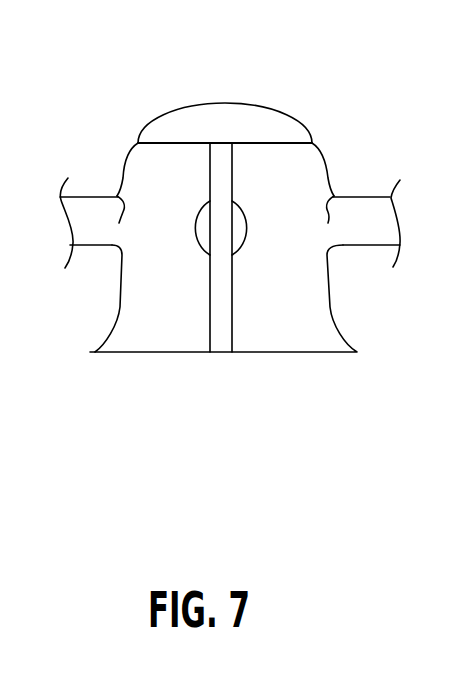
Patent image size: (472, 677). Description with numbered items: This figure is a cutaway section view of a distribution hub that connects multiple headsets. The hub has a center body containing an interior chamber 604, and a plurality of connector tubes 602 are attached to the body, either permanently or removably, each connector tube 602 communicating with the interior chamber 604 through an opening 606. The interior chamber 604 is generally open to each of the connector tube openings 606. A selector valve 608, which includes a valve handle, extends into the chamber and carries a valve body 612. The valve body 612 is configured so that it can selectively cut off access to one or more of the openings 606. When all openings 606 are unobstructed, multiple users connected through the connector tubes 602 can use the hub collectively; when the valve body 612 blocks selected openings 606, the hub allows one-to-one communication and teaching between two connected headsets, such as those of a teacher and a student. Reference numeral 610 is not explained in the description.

The connector tube 602 is at (90, 246).
The interior chamber 604 is at (300, 296).
The opening 606 is at (117, 195).
The selector valve 608 is at (170, 102).
The top surface 610 is at (224, 103).
The valve body 612 is at (216, 293).